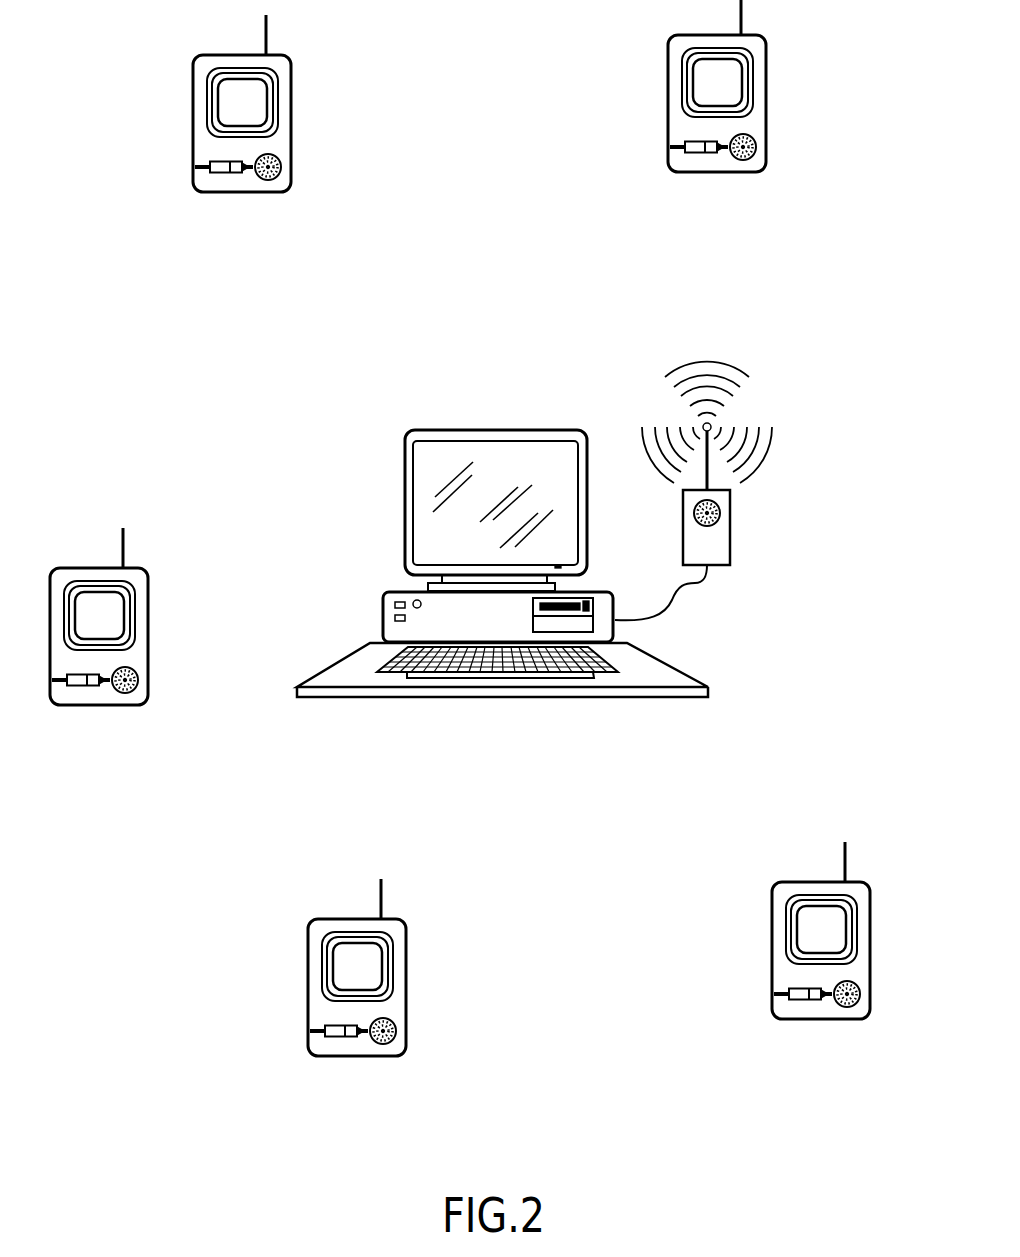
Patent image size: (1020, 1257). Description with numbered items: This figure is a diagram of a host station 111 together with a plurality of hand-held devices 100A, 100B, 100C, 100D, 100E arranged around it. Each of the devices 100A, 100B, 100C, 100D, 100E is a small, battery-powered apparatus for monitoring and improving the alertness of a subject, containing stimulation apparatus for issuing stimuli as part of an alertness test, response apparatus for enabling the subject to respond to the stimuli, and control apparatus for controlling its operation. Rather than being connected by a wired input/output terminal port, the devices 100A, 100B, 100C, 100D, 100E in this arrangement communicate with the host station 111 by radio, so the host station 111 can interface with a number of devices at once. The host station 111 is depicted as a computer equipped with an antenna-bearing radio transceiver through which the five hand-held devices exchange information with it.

The device 100A is at (193, 150).
The device 100B is at (65, 704).
The device 100C is at (308, 962).
The device 100D is at (772, 928).
The device 100E is at (768, 133).
The host station 111 is at (383, 613).